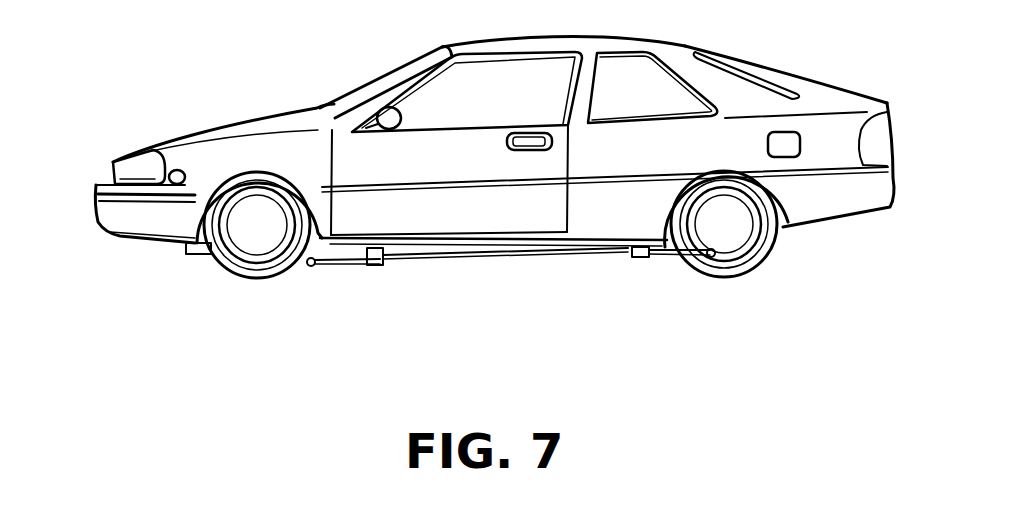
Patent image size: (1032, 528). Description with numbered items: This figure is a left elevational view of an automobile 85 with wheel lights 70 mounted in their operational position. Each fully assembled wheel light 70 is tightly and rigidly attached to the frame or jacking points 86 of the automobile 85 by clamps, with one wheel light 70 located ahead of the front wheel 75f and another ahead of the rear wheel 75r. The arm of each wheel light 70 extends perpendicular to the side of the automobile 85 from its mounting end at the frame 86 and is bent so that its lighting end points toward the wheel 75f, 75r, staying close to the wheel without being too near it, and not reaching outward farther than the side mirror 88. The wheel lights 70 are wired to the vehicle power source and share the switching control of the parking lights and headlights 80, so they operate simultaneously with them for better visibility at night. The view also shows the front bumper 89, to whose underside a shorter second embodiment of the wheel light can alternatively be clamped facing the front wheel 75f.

The automobile 85 is at (223, 112).
The side mirror 88 is at (390, 116).
The parking lights and headlights 80 is at (176, 168).
The front bumper 89 is at (140, 215).
The front wheel 75f is at (245, 278).
The rear wheel 75r is at (765, 260).
The frame or jacking points 86 is at (490, 257).
The wheel light 70 is at (347, 265).